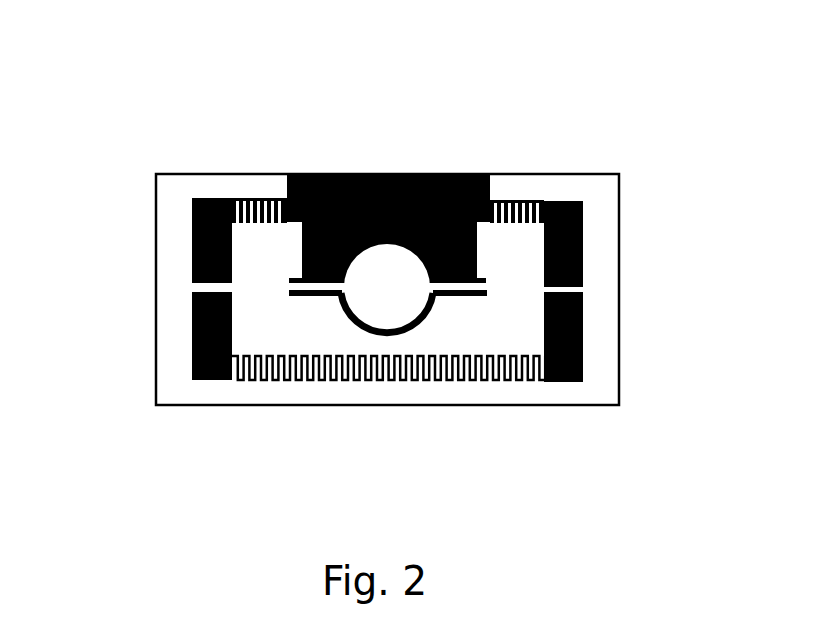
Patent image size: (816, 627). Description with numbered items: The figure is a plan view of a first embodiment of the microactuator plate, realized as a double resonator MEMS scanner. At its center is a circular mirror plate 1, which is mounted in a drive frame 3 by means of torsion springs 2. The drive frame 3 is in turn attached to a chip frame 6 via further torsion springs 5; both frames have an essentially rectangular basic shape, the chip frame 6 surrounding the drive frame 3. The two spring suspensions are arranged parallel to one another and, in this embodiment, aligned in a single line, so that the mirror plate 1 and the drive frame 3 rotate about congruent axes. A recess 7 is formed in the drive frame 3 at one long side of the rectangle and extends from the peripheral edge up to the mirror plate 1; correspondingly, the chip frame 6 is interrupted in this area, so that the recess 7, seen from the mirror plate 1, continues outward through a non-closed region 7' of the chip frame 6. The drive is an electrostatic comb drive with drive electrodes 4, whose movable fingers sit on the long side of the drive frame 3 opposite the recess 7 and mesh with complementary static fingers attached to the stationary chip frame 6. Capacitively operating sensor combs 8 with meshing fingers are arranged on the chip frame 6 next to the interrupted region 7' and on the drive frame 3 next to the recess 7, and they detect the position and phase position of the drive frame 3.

The mirror plate 1 is at (363, 305).
The torsion springs 2 is at (460, 289).
The drive frame 3 is at (422, 344).
The drive electrodes 4 is at (355, 376).
The torsion springs 5 is at (577, 291).
The chip frame 6 is at (177, 202).
The recess 7 is at (411, 166).
The interrupted region 7' is at (388, 160).
The sensor combs 8 is at (241, 205).